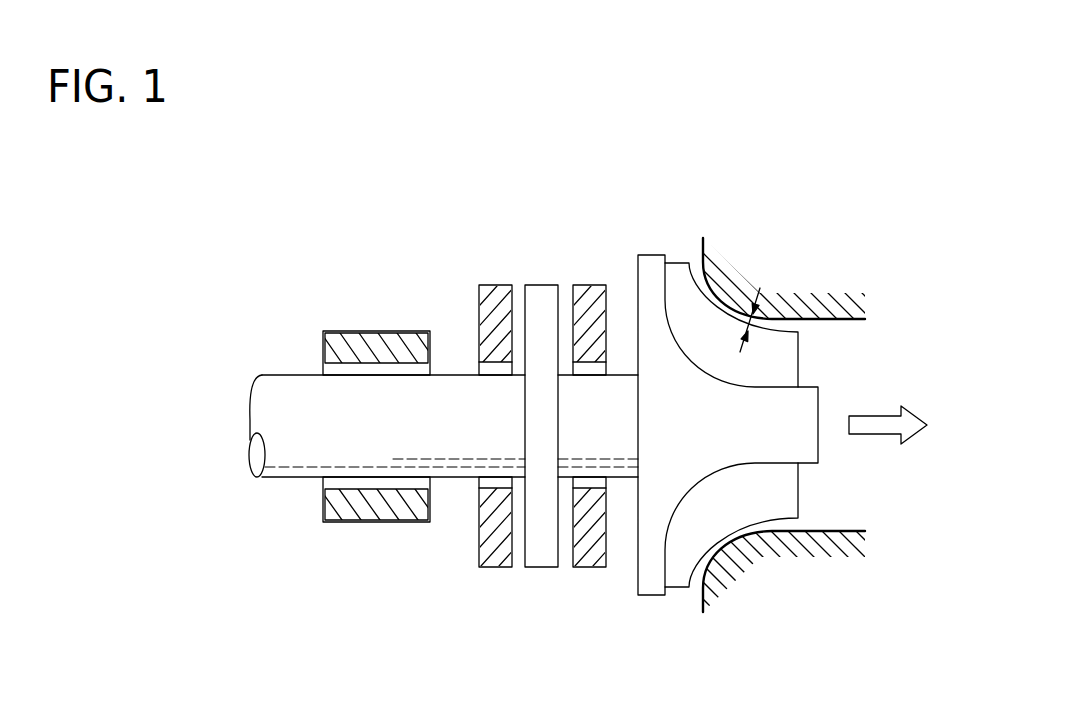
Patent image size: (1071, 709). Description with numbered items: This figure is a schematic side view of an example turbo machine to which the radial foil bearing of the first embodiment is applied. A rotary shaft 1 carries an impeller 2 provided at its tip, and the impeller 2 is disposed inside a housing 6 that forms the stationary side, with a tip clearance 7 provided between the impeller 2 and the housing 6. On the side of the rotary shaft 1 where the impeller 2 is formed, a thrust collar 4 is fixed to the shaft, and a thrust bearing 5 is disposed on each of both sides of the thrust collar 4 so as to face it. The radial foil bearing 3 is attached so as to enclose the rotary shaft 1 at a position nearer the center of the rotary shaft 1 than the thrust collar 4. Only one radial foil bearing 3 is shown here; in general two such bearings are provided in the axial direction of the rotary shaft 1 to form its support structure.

The rotary shaft 1 is at (283, 383).
The impeller 2 is at (698, 322).
The radial foil bearing 3 is at (373, 345).
The thrust collar 4 is at (543, 298).
The thrust bearing 5 is at (492, 297).
The housing 6 is at (731, 286).
The tip clearance 7 is at (768, 323).